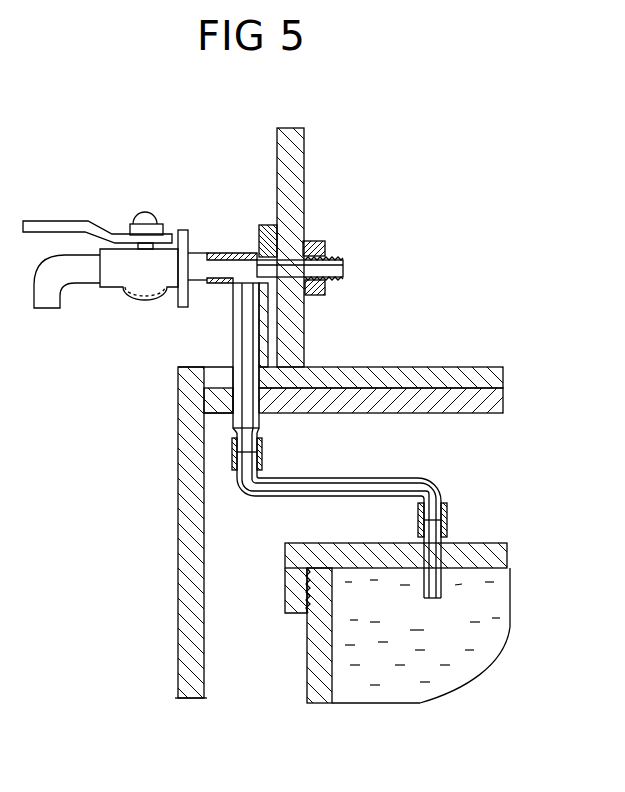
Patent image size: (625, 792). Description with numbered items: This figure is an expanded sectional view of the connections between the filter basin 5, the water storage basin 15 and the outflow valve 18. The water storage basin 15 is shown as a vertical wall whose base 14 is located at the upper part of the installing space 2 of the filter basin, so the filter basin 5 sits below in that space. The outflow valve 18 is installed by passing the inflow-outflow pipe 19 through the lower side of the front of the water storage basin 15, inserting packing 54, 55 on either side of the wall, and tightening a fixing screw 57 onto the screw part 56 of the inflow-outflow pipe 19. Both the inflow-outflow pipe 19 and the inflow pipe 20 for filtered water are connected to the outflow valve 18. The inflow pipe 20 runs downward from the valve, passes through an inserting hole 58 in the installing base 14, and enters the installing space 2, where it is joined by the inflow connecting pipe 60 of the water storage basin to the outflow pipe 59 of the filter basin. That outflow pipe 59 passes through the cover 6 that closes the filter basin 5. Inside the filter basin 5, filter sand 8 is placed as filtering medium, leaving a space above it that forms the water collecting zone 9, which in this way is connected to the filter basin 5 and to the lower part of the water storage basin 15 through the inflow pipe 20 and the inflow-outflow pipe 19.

The installing space 2 is at (257, 591).
The filter basin 5 is at (307, 682).
The cover 6 is at (373, 545).
The filter sand 8 is at (457, 684).
The water collecting zone 9 is at (497, 617).
The base 14 is at (385, 413).
The water storage basin 15 is at (304, 182).
The outflow valve 18 is at (120, 217).
The inflow-outflow pipe 19 is at (346, 268).
The inflow pipe 20 is at (232, 336).
The packing 54 is at (296, 292).
The packing 55 is at (259, 238).
The screw part 56 is at (332, 259).
The fixing screw 57 is at (317, 242).
The inserting hole 58 is at (240, 415).
The outflow pipe 59 is at (443, 591).
The inflow connecting pipe 60 is at (306, 497).